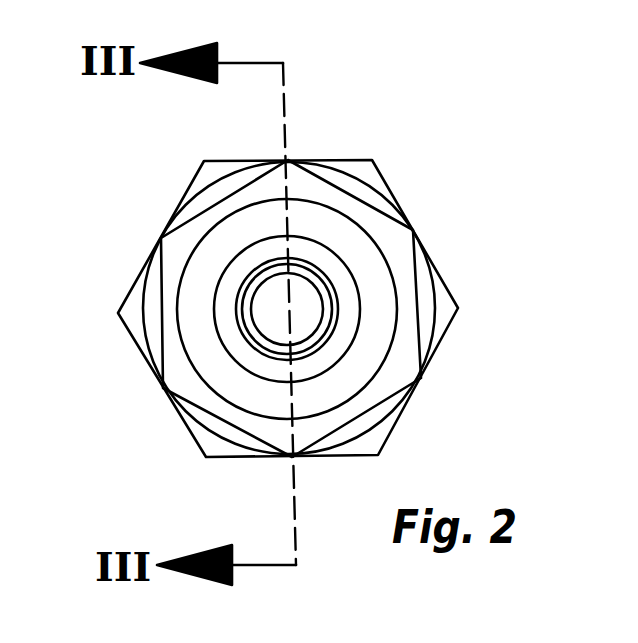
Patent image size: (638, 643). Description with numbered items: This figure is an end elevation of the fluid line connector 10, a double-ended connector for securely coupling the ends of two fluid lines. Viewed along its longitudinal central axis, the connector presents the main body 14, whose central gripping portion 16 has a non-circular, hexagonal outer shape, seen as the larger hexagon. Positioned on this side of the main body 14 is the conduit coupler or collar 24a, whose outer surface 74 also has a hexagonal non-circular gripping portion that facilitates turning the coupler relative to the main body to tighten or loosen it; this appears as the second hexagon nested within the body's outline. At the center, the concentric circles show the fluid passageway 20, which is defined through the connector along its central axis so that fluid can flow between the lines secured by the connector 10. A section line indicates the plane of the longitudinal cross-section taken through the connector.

The fluid line connector 10 is at (496, 115).
The main body 14 is at (367, 170).
The central gripping portion 16 is at (352, 154).
The outer surface 74 is at (426, 285).
The conduit coupler 24a is at (165, 290).
The fluid passageway 20 is at (275, 315).